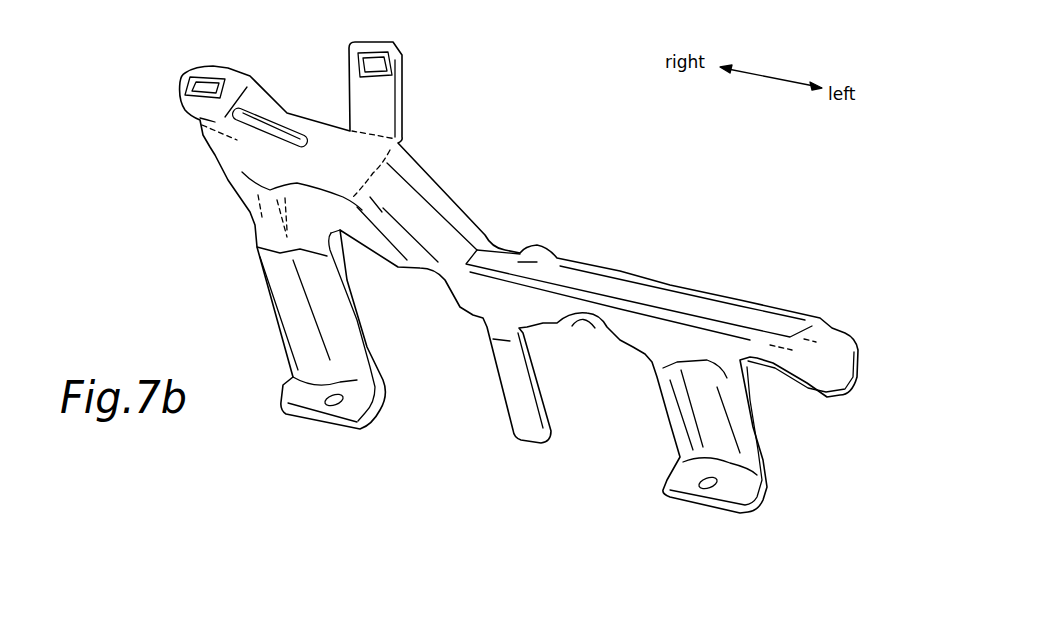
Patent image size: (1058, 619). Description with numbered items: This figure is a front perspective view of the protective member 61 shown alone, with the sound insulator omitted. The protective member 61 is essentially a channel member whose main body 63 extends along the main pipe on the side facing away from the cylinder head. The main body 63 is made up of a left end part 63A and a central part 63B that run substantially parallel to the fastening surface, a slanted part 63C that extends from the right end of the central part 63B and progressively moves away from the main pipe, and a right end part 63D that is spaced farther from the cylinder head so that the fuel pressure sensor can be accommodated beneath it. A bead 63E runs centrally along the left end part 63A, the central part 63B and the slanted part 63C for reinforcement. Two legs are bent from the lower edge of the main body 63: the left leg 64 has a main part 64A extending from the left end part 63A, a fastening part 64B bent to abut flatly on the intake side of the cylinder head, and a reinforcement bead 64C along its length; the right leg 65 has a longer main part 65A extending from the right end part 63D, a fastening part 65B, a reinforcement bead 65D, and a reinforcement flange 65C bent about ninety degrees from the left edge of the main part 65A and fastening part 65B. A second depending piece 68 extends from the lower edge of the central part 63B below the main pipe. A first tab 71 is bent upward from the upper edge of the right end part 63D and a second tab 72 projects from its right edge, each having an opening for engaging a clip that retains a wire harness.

The protective member 61 is at (532, 113).
The main body 63 is at (667, 278).
The left end part 63A is at (730, 343).
The central part 63B is at (553, 297).
The slanted part 63C is at (455, 217).
The right end part 63D is at (320, 133).
The bead 63E is at (622, 288).
The left leg 64 is at (757, 427).
The main part 64A is at (672, 412).
The fastening part 64B is at (730, 497).
The reinforcement bead 64C is at (723, 442).
The right leg 65 is at (270, 313).
The main part 65A is at (277, 278).
The fastening part 65B is at (312, 403).
The reinforcement flange 65C is at (362, 353).
The reinforcement bead 65D is at (330, 333).
The second depending piece 68 is at (517, 415).
The first tab 71 is at (379, 103).
The second tab 72 is at (182, 91).